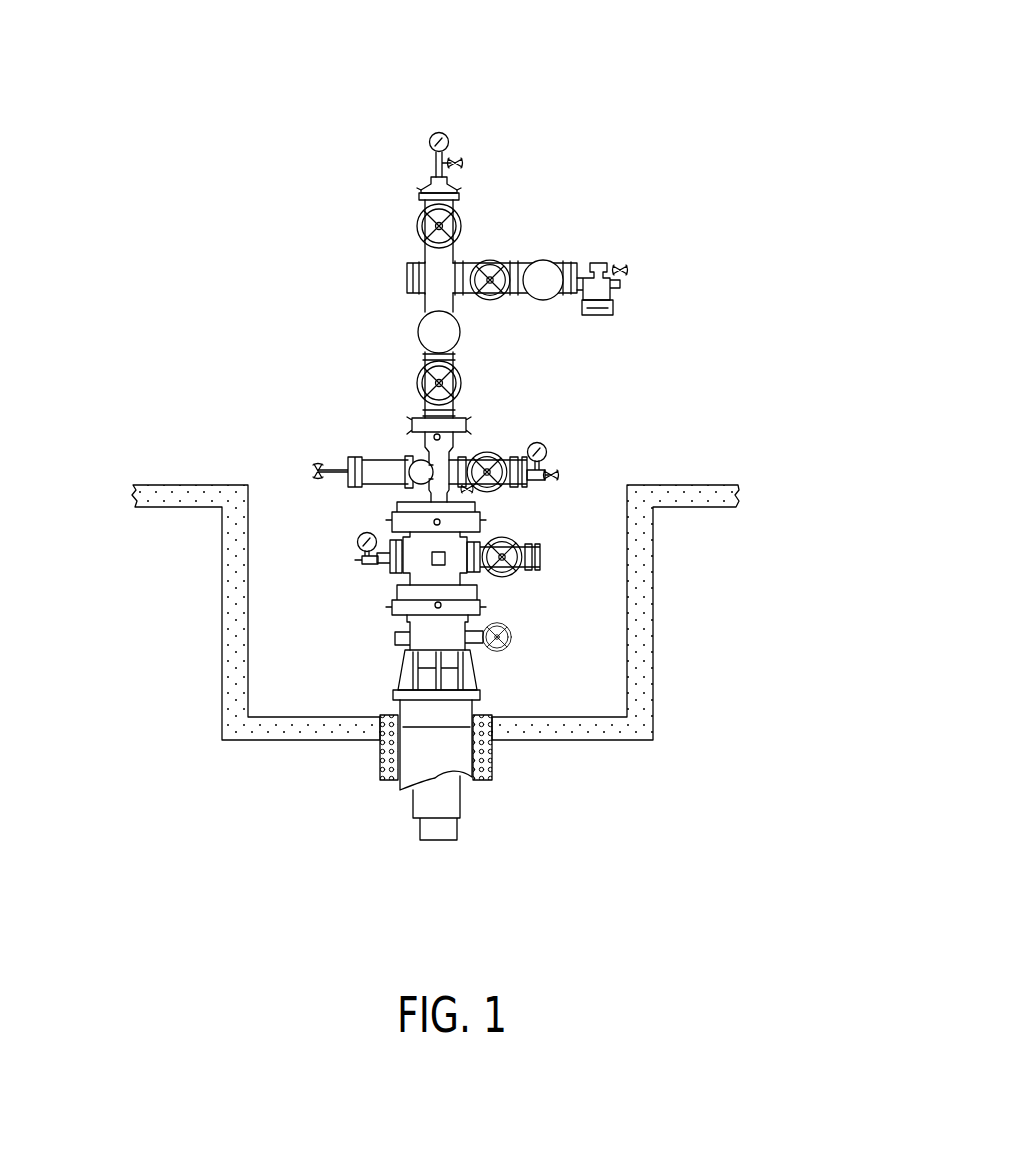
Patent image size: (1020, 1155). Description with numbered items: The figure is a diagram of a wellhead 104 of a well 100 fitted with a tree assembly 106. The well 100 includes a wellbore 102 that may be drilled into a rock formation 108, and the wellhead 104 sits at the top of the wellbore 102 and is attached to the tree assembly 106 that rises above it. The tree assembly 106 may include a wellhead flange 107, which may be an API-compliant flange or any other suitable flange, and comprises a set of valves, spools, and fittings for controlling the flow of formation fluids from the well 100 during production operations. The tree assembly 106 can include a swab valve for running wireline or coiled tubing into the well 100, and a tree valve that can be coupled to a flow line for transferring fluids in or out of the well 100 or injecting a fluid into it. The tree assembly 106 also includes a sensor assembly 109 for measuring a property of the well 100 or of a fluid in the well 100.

The well 100 is at (512, 90).
The wellbore 102 is at (495, 806).
The wellhead 104 is at (550, 597).
The tree assembly 106 is at (315, 135).
The wellhead flange 107 is at (392, 452).
The rock formation 108 is at (220, 598).
The sensor assembly 109 is at (348, 490).